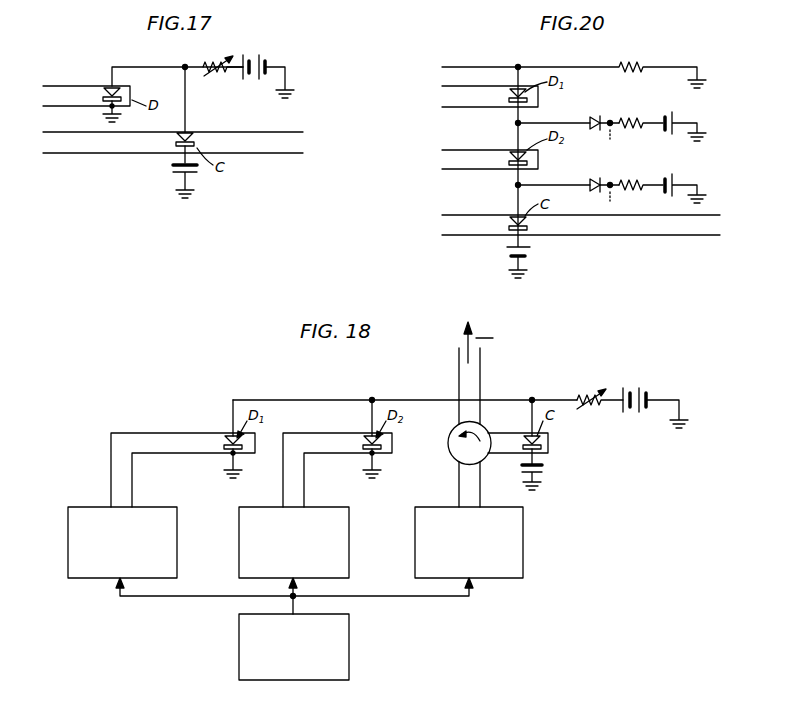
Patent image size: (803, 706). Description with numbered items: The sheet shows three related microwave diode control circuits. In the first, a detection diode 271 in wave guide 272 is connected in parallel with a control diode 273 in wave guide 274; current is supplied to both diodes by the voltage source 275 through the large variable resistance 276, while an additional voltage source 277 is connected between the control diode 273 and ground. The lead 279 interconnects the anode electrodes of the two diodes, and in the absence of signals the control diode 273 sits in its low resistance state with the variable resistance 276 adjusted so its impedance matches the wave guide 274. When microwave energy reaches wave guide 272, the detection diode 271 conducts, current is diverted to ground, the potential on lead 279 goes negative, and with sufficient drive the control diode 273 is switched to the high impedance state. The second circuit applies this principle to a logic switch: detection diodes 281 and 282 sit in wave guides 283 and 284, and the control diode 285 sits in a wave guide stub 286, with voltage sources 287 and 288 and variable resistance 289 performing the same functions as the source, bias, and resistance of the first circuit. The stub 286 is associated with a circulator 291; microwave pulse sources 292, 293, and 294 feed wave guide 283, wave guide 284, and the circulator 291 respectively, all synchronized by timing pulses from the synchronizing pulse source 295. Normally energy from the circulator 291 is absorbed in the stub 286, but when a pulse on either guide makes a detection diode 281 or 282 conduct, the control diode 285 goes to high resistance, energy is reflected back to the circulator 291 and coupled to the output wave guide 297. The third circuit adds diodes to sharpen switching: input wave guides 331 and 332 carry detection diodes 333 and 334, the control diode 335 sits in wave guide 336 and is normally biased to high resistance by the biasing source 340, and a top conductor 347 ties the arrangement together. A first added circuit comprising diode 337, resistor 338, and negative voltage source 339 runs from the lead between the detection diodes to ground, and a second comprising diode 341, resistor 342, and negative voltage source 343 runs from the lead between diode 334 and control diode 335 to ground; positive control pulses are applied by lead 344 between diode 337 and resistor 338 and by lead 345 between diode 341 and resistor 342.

In FIG. 17, the detection diode 271 is at (120, 95).
In FIG. 17, the wave guide 272 is at (69, 86).
In FIG. 17, the control diode 273 is at (192, 131).
In FIG. 17, the wave guide 274 is at (86, 145).
In FIG. 17, the voltage source 275 is at (266, 62).
In FIG. 17, the variable resistance 276 is at (209, 76).
In FIG. 17, the voltage source 277 is at (178, 168).
In FIG. 17, the lead 279 is at (170, 65).
In FIG. 18, the detection diode 281 is at (226, 435).
In FIG. 18, the detection diode 282 is at (365, 435).
In FIG. 18, the wave guide 283 is at (137, 441).
In FIG. 18, the wave guide 284 is at (311, 441).
In FIG. 18, the control diode 285 is at (550, 447).
In FIG. 18, the wave guide stub 286 is at (502, 437).
In FIG. 18, the voltage source 287 is at (645, 394).
In FIG. 18, the voltage source 288 is at (545, 466).
In FIG. 18, the variable resistance 289 is at (582, 409).
In FIG. 18, the circulator 291 is at (458, 446).
In FIG. 18, the microwave pulse source 292 is at (177, 531).
In FIG. 18, the microwave pulse source 293 is at (349, 533).
In FIG. 18, the microwave pulse source 294 is at (523, 533).
In FIG. 18, the synchronizing pulse source 295 is at (350, 645).
In FIG. 18, the output wave guide 297 is at (480, 372).
In FIG. 20, the input wave guide 331 is at (461, 98).
In FIG. 20, the input wave guide 332 is at (456, 162).
In FIG. 20, the detection diode 333 is at (540, 100).
In FIG. 20, the detection diode 334 is at (540, 161).
In FIG. 20, the control diode 335 is at (511, 213).
In FIG. 20, the wave guide 336 is at (461, 227).
In FIG. 20, the diode 337 is at (593, 116).
In FIG. 20, the resistor 338 is at (634, 116).
In FIG. 20, the negative source of voltage 339 is at (679, 112).
In FIG. 20, the biasing source 340 is at (530, 256).
In FIG. 20, the diode 341 is at (593, 178).
In FIG. 20, the resistor 342 is at (633, 178).
In FIG. 20, the negative source of voltage 343 is at (678, 176).
In FIG. 20, the lead 344 is at (612, 127).
In FIG. 20, the lead 345 is at (612, 189).
In FIG. 20, the conductor 347 is at (462, 65).